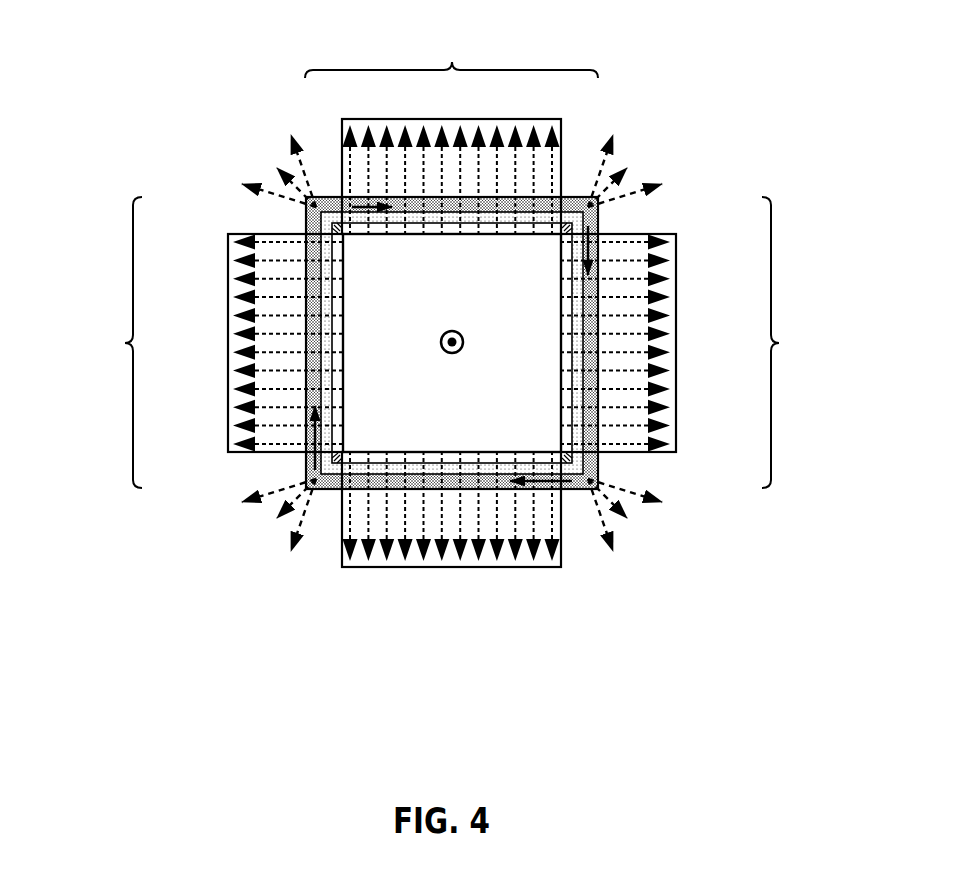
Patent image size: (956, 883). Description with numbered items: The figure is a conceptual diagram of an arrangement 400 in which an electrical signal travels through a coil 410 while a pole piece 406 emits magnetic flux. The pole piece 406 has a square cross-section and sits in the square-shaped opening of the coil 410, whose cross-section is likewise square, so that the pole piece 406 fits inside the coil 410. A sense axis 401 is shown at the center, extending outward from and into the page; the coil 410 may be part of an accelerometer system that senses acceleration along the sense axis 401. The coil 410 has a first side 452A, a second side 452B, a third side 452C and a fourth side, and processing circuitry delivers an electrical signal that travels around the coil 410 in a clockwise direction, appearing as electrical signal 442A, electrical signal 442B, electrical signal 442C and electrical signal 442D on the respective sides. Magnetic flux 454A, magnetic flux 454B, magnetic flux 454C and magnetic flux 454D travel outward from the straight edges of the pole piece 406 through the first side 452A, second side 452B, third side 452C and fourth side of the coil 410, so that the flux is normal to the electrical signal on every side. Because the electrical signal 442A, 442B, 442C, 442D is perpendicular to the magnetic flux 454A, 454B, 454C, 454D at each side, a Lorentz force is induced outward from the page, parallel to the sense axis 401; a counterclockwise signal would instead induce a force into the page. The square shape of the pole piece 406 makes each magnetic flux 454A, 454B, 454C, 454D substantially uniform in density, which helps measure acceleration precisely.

The flow control arrangement 400 is at (155, 76).
The sense axis 401 is at (452, 330).
The pole piece 406 is at (371, 271).
The coil 410 is at (600, 462).
The electrical signal 442A is at (316, 414).
The electrical signal 442B is at (587, 266).
The electrical signal 442C is at (354, 208).
The electrical signal 442D is at (548, 479).
The first side 452A is at (102, 342).
The second side 452B is at (803, 342).
The third side 452C is at (451, 58).
The magnetic flux 454A is at (229, 233).
The magnetic flux 454B is at (656, 233).
The magnetic flux 454C is at (553, 119).
The magnetic flux 454D is at (305, 605).